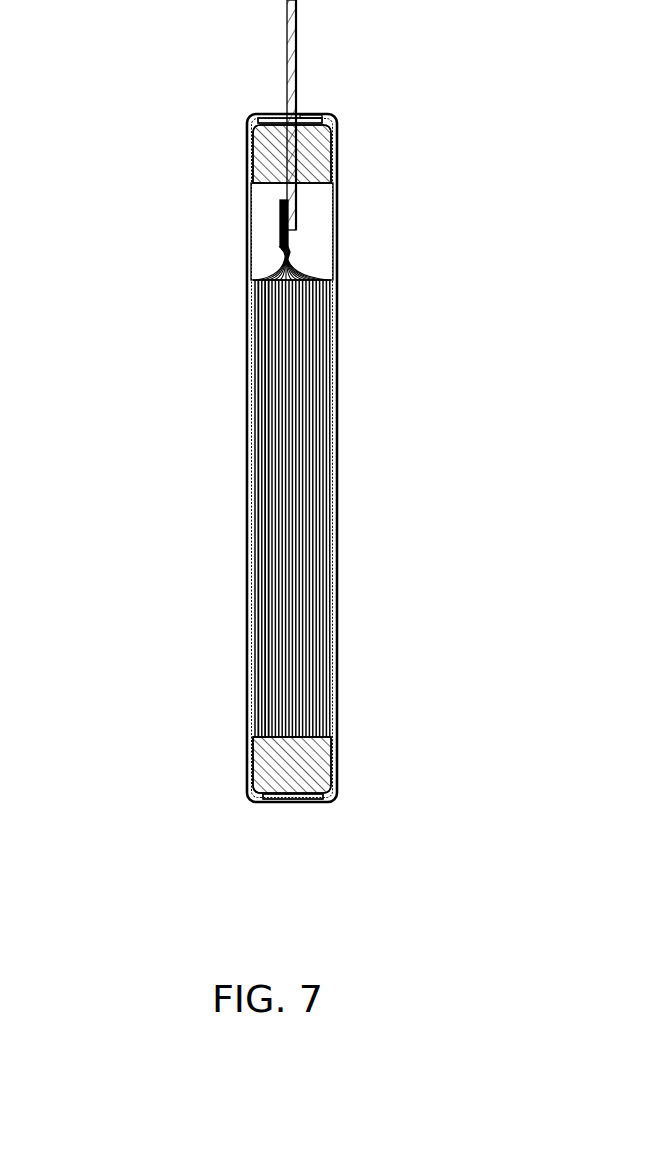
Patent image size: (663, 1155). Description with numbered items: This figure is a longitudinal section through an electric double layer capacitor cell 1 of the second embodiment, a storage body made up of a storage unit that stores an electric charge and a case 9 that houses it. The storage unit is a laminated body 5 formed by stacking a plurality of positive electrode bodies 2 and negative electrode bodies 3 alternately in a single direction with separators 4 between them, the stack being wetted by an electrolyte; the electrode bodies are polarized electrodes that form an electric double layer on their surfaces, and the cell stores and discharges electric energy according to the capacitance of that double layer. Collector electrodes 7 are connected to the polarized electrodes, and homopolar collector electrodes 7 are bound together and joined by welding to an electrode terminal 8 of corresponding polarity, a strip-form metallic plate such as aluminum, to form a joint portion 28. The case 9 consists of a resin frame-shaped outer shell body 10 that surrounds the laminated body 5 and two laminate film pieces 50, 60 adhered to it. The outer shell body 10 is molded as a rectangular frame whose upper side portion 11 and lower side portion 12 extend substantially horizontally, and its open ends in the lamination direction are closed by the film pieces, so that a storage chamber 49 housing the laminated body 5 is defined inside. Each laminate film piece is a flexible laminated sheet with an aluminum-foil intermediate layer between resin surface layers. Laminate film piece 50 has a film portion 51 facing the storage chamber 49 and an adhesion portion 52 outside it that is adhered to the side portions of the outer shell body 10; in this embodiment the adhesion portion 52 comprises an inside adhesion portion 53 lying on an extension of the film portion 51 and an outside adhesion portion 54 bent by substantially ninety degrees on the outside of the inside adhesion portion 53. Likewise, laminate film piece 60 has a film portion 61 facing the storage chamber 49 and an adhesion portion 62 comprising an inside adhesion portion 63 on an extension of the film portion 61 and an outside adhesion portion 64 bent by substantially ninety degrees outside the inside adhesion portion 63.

The electric double layer capacitor cell 1 is at (325, 87).
The positive electrode body 2 is at (260, 533).
The negative electrode body 3 is at (270, 578).
The separator 4 is at (265, 620).
The laminated body 5 is at (157, 515).
The collector electrode 7 is at (290, 255).
The electrode terminal 8 is at (287, 32).
The case 9 is at (357, 545).
The outer shell body 10 is at (341, 180).
The upper side portion 11 is at (312, 160).
The lower side portion 12 is at (290, 794).
The joint portion 28 is at (290, 215).
The storage chamber 49 is at (312, 270).
The laminate film piece 50 is at (108, 685).
The film portion 51 is at (249, 692).
The adhesion portion 52 is at (130, 93).
The inside adhesion portion 53 is at (252, 150).
The outside adhesion portion 54 is at (258, 116).
The laminate film piece 60 is at (480, 683).
The film portion 61 is at (336, 697).
The adhesion portion 62 is at (428, 66).
The inside adhesion portion 63 is at (337, 143).
The outside adhesion portion 64 is at (312, 117).